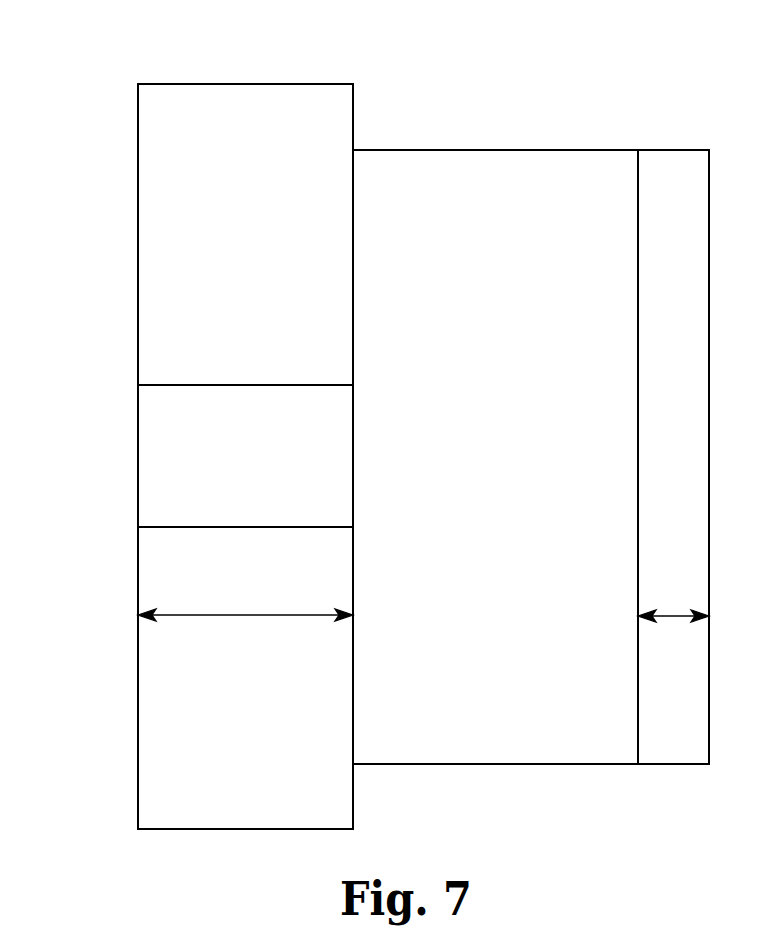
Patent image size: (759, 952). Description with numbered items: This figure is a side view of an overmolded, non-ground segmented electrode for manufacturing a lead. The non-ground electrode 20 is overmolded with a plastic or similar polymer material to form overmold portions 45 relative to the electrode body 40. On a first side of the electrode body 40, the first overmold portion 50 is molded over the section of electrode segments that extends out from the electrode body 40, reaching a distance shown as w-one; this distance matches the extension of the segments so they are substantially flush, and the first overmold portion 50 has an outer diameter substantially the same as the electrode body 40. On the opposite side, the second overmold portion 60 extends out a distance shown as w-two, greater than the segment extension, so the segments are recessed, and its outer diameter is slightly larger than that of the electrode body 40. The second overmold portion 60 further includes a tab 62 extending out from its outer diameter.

The non-ground electrode 20 is at (370, 455).
The electrode body 40 is at (510, 172).
The first overmold portion 50 is at (671, 172).
The second overmold portion 60 is at (162, 176).
The tab 62 is at (153, 459).
The overmold portions 45 is at (196, 829).